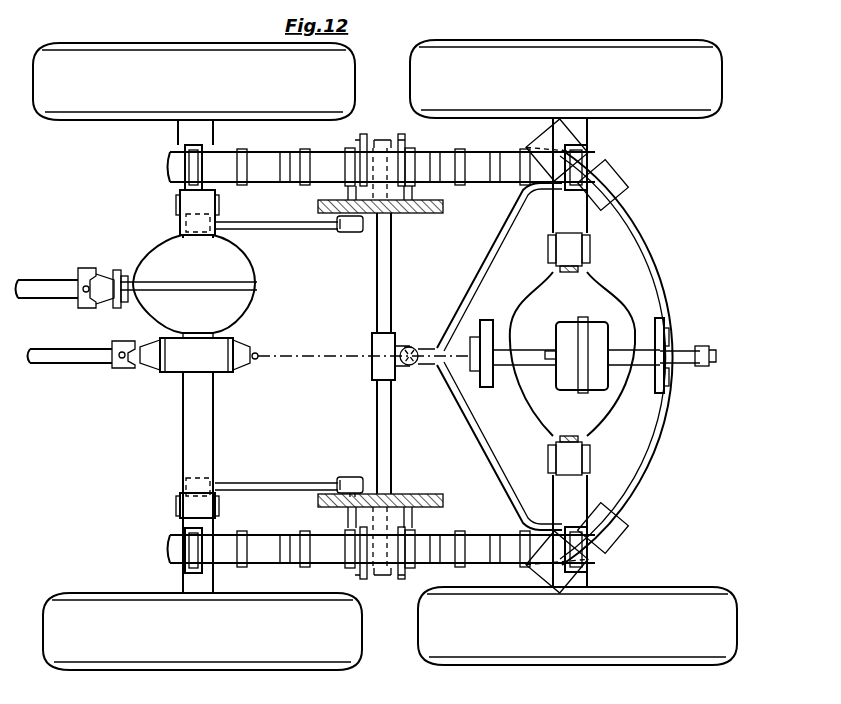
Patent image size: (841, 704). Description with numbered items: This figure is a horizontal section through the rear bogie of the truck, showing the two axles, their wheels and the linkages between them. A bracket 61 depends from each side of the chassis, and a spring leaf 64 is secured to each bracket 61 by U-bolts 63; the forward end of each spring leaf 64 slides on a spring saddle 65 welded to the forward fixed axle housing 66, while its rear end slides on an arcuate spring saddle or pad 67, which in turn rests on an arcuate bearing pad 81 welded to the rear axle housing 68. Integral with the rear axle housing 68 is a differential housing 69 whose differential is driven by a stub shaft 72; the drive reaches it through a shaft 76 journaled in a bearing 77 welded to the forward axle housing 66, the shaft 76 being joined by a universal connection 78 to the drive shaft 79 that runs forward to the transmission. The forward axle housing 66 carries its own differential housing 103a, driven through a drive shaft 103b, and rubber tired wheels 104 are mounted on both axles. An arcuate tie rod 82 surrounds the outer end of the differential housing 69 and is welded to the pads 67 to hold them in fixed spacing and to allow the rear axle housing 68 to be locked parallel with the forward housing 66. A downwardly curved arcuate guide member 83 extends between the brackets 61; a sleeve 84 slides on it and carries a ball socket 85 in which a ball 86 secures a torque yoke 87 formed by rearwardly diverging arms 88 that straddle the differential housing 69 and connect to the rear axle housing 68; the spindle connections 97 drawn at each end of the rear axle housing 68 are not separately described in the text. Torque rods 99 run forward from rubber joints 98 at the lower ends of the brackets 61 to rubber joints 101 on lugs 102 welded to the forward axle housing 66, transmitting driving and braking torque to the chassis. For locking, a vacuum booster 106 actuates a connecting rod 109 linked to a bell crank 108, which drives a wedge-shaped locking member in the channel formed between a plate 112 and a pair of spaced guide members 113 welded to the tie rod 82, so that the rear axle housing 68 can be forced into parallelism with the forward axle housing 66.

The bracket 61 is at (425, 214).
The U-bolts 63 is at (352, 564).
The spring leaf 64 is at (286, 158).
The spring saddles 65 is at (185, 145).
The forward fixed axle housing 66 is at (183, 429).
The arcuate spring saddles or pads 67 is at (588, 141).
The rear axle housing 68 is at (587, 222).
The differential housing 69 is at (600, 297).
The stub shaft 72 is at (476, 362).
The shaft 76 is at (250, 364).
The bearing 77 is at (226, 345).
The universal connection 78 is at (122, 372).
The drive shaft 79 is at (52, 364).
The arcuate bearing pads 81 is at (537, 135).
The arcuate tie rod 82 is at (655, 463).
The arcuate guide member 83 is at (391, 420).
The sleeve 84 is at (372, 373).
The ball socket 85 is at (406, 347).
The ball 86 is at (408, 366).
The torque yoke 87 is at (414, 349).
The arms 88 is at (480, 283).
The spindle bearing 97 is at (568, 270).
The rubber joints 98 is at (350, 233).
The torque rods 99 is at (276, 230).
The rubber joints 101 is at (212, 236).
The lugs 102 is at (216, 205).
The differential housing 103a is at (170, 254).
The drive shaft 103b is at (36, 283).
The rubber tired wheels 104 is at (90, 120).
The vacuum booster 106 is at (565, 376).
The bell crank 108 is at (708, 347).
The connecting rod 109 is at (682, 364).
The plate 112 is at (657, 386).
The guide members 113 is at (670, 324).